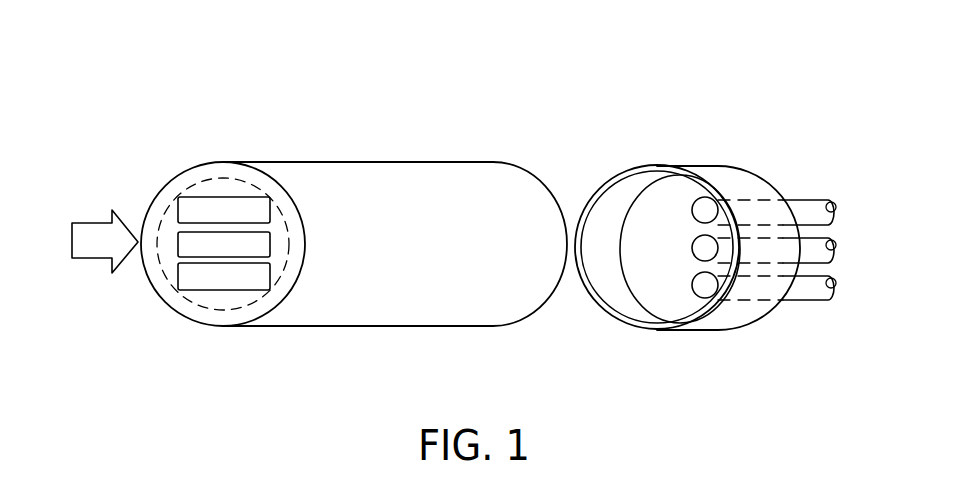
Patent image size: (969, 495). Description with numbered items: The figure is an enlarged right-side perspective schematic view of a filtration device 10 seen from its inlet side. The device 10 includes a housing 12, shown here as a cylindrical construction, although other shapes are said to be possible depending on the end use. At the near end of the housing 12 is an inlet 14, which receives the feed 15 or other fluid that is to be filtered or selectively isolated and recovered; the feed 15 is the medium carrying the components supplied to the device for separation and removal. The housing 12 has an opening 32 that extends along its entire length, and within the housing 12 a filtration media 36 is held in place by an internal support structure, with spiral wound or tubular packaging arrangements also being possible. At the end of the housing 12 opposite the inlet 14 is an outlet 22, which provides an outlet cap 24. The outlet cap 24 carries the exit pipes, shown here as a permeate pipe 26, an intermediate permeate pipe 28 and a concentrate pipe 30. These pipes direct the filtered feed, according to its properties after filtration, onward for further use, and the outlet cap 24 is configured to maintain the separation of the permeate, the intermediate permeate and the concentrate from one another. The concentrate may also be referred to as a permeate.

The filtration device 10 is at (552, 66).
The housing 12 is at (372, 172).
The inlet 14 is at (222, 186).
The feed 15 is at (102, 252).
The outlet 22 is at (543, 187).
The outlet cap 24 is at (713, 178).
The permeate pipe 26 is at (803, 287).
The intermediate permeate pipe 28 is at (817, 250).
The concentrate pipe 30 is at (803, 210).
The opening 32 is at (230, 298).
The filtration media 36 is at (231, 178).